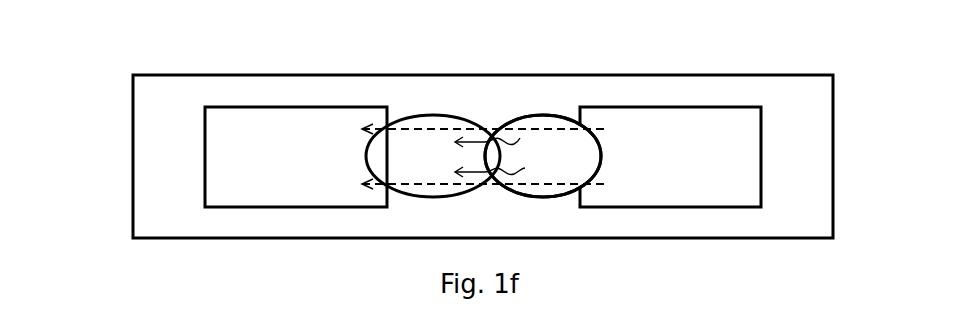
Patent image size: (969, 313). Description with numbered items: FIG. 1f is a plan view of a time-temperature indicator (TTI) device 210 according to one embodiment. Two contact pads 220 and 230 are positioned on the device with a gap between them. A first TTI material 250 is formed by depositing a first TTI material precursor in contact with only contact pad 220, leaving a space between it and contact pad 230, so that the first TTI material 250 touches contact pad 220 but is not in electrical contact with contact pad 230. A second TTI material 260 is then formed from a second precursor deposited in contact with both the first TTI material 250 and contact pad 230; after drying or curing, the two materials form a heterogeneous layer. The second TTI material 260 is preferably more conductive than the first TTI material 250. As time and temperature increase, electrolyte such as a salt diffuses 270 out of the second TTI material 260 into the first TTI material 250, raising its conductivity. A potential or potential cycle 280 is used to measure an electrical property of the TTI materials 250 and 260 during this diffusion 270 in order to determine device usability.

The microfluidic device / substrate 210 is at (88, 68).
The contact pad 220 is at (230, 116).
The contact pad 230 is at (725, 120).
The first TTI material 250 is at (403, 115).
The second TTI material 260 is at (535, 117).
The diffusion of electrolyte 270 is at (470, 172).
The potential or potential cycle 280 is at (607, 130).